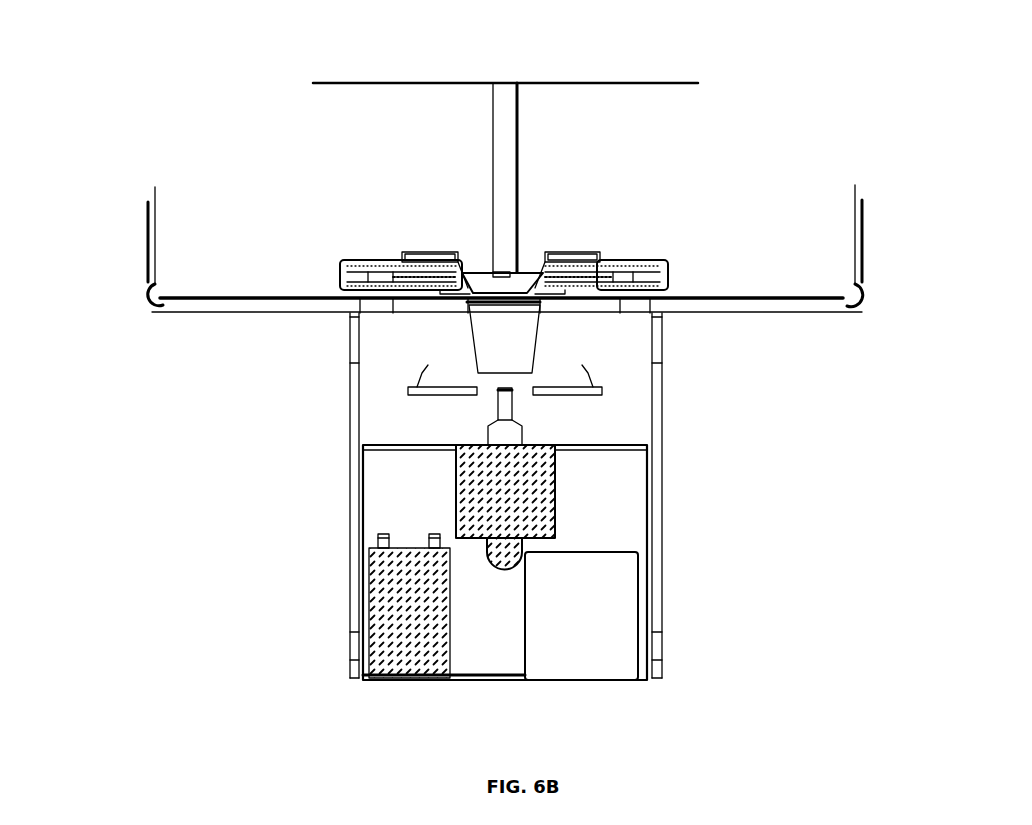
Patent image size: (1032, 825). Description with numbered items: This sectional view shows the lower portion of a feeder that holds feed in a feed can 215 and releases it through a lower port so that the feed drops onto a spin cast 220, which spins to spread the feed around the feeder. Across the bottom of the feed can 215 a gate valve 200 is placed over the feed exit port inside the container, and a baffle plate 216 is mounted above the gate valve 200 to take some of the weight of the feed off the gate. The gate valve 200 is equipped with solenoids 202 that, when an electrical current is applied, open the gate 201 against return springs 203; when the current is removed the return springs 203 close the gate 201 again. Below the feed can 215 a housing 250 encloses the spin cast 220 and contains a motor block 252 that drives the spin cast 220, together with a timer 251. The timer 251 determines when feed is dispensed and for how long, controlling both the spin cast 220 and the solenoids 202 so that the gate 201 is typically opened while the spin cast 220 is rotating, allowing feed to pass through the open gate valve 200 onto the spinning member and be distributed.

The gate valve 200 is at (425, 253).
The gate 201 is at (478, 272).
The solenoids 202 is at (340, 268).
The return springs 203 is at (580, 288).
The feed can 215 is at (145, 232).
The baffle plate 216 is at (575, 83).
The spin cast 220 is at (430, 397).
The housing 250 is at (362, 647).
The timer 251 is at (640, 602).
The motor block 252 is at (555, 473).